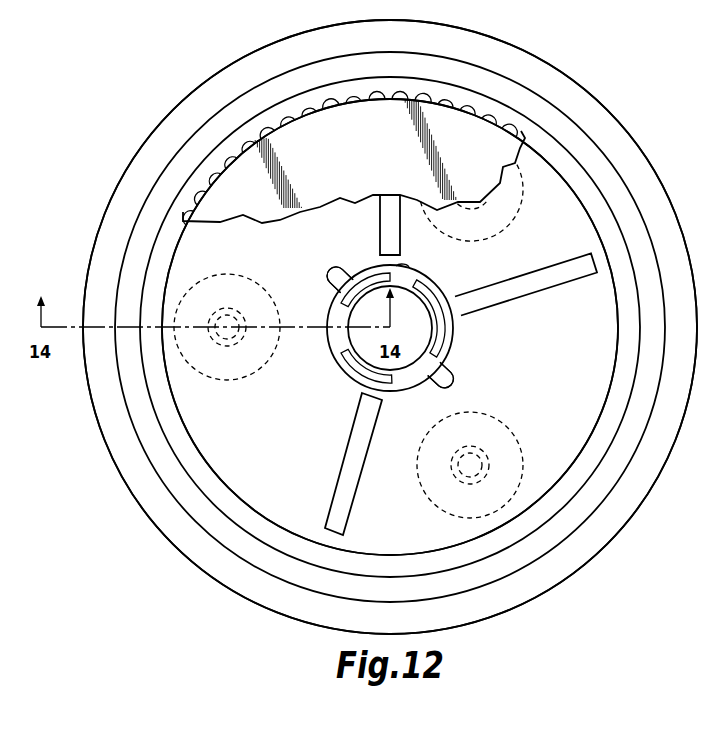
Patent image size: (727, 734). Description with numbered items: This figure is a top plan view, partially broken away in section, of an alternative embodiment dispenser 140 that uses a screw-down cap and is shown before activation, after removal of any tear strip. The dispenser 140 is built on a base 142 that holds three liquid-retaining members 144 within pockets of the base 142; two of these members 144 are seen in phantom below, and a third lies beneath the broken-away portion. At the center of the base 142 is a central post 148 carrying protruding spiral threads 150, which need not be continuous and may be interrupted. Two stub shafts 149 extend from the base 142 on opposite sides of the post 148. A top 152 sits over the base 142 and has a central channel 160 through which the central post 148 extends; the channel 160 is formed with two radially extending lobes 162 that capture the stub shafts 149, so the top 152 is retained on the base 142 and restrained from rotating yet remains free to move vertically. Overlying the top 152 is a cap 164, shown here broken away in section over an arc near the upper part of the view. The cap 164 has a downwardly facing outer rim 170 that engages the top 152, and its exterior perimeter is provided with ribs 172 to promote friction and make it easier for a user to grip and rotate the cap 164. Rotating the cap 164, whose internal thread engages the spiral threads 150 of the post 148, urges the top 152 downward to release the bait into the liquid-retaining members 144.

The dispenser 140 is at (120, 86).
The base 142 is at (102, 222).
The liquid-retaining member 144 is at (256, 383).
The central post 148 is at (420, 284).
The stub shaft 149 is at (324, 269).
The spiral thread 150 is at (354, 372).
The top 152 is at (172, 267).
The central channel 160 is at (410, 291).
The lobe 162 is at (336, 266).
The cap 164 is at (463, 92).
The outer rim 170 is at (338, 90).
The rib 172 is at (347, 97).